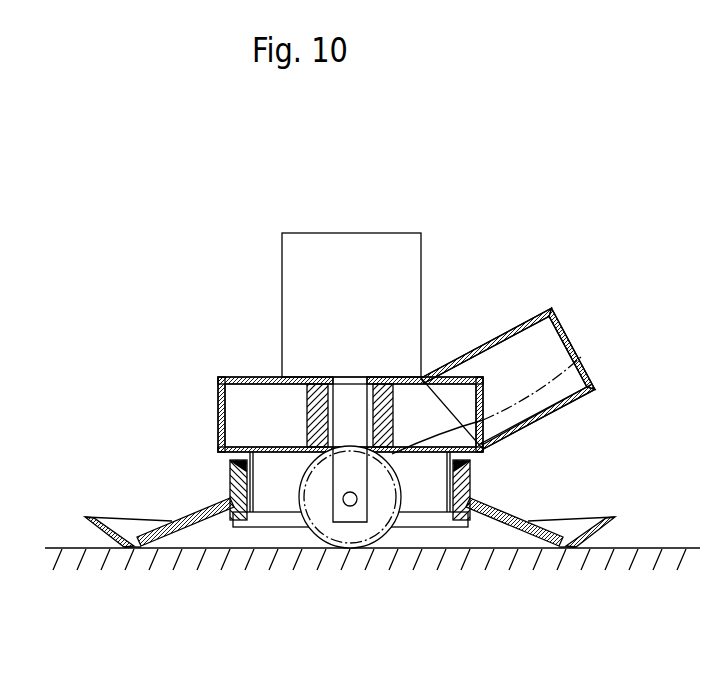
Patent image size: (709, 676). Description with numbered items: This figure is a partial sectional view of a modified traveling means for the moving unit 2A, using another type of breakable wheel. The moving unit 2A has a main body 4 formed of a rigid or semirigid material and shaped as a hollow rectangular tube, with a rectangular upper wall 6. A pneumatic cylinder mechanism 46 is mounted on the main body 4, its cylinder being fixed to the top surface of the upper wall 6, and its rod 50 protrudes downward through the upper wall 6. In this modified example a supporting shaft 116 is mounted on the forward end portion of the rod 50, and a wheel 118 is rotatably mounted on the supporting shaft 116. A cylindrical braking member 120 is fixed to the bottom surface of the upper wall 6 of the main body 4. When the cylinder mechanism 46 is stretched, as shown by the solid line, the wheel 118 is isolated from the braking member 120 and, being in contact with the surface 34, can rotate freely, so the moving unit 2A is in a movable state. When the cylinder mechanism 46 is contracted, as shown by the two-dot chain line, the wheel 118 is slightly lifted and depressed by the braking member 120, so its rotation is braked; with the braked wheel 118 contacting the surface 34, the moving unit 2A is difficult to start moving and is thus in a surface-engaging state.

The moving unit 2A is at (354, 387).
The main body 4 is at (247, 377).
The upper side wall 6 is at (298, 380).
The pneumatic cylinder mechanism 46 is at (373, 232).
The cylindrical braking member 120 is at (393, 401).
The wheel 118 is at (583, 355).
The rod 50 is at (338, 485).
The supporting shaft 116 is at (357, 501).
The surface 34 is at (650, 546).